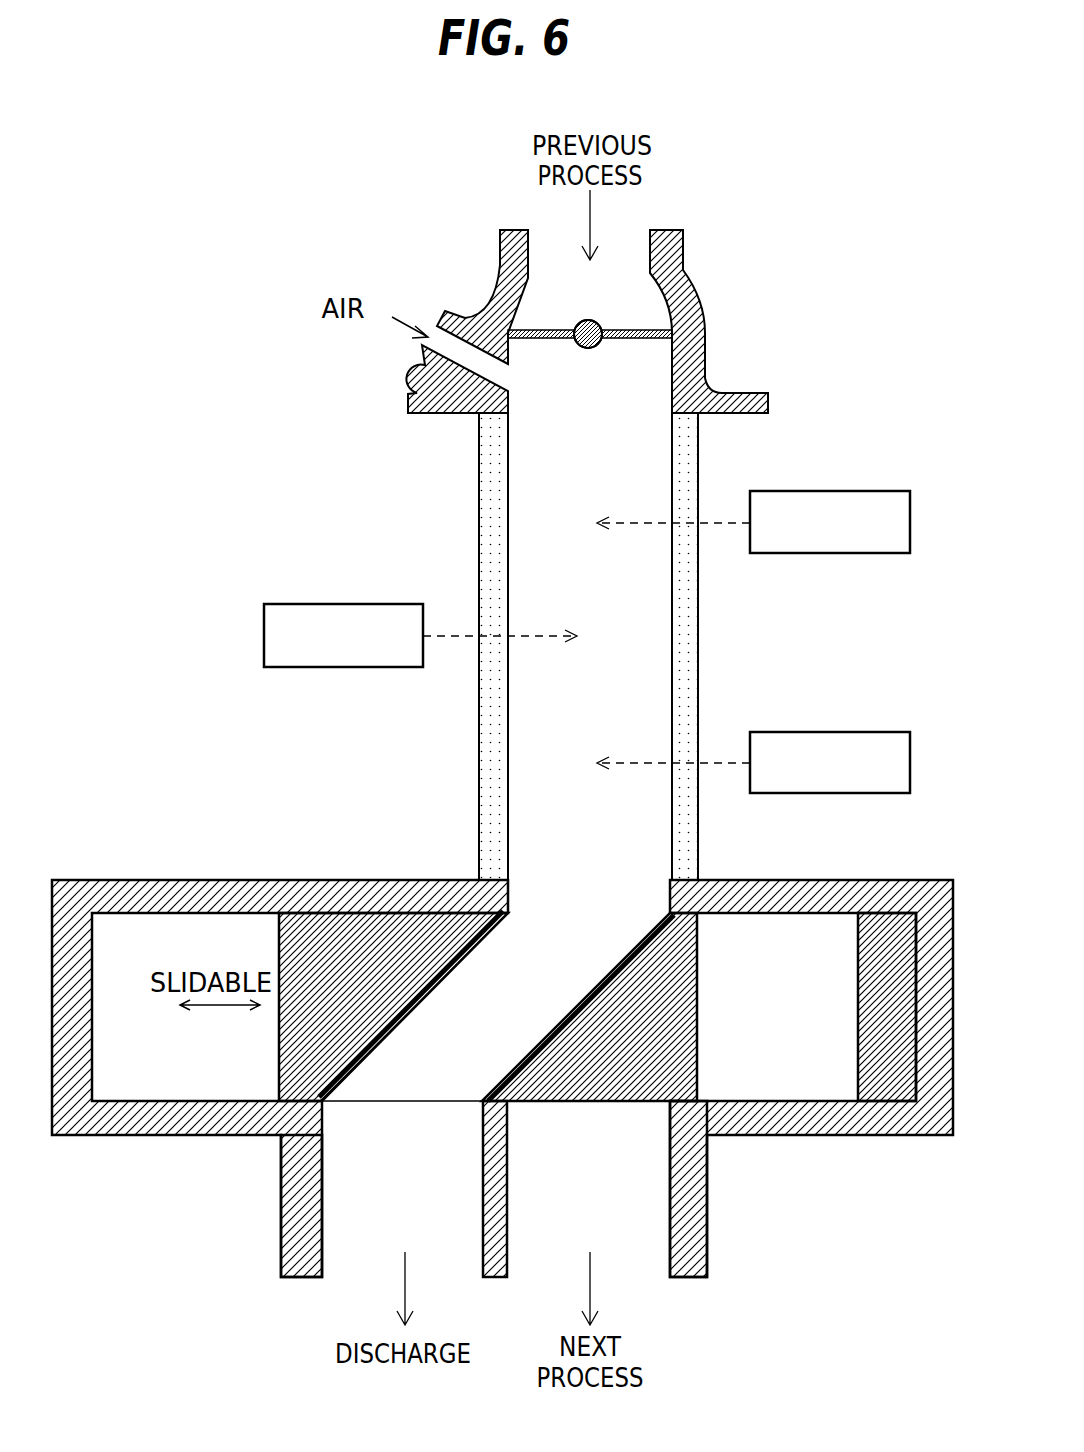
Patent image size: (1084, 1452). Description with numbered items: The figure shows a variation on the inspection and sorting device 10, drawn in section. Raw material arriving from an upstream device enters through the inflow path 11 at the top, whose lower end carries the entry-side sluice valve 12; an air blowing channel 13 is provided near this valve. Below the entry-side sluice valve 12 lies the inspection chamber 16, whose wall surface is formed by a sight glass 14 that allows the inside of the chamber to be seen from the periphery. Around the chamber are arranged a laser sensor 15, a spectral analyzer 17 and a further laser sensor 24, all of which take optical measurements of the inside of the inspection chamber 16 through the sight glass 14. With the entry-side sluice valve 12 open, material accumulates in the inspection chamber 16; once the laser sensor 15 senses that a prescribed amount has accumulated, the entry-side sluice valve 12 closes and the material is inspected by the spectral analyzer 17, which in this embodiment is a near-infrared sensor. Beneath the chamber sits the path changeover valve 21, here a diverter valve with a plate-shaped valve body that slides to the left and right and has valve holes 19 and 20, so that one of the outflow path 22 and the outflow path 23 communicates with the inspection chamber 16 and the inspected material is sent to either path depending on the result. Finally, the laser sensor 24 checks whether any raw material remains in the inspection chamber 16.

The inspection and sorting device 10 is at (892, 279).
The inflow path 11 is at (625, 253).
The entry-side sluice valve 12 is at (645, 330).
The air blowing channel 13 is at (423, 364).
The sight glass 14 is at (697, 443).
The laser sensor 15 is at (890, 491).
The inspection chamber 16 is at (653, 627).
The spectral analyzer 17 is at (890, 732).
The valve hole 19 is at (458, 1070).
The valve hole 20 is at (797, 1070).
The path changeover valve 21 is at (885, 1085).
The outflow path 22 is at (625, 1227).
The outflow path 23 is at (350, 1200).
The laser sensor 24 is at (284, 604).